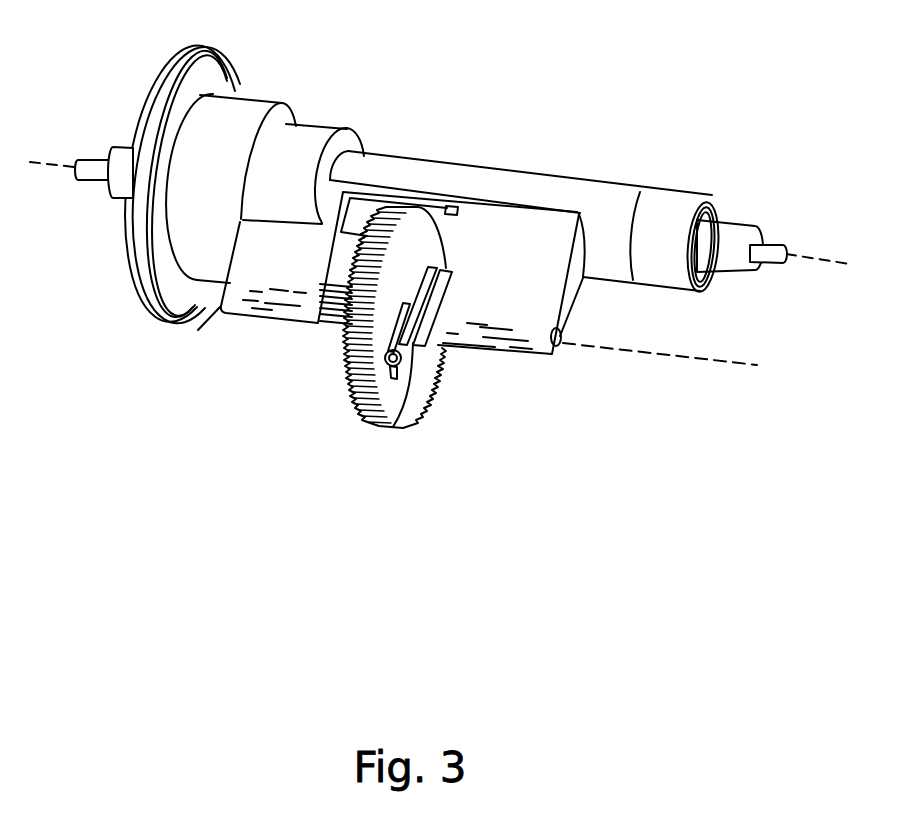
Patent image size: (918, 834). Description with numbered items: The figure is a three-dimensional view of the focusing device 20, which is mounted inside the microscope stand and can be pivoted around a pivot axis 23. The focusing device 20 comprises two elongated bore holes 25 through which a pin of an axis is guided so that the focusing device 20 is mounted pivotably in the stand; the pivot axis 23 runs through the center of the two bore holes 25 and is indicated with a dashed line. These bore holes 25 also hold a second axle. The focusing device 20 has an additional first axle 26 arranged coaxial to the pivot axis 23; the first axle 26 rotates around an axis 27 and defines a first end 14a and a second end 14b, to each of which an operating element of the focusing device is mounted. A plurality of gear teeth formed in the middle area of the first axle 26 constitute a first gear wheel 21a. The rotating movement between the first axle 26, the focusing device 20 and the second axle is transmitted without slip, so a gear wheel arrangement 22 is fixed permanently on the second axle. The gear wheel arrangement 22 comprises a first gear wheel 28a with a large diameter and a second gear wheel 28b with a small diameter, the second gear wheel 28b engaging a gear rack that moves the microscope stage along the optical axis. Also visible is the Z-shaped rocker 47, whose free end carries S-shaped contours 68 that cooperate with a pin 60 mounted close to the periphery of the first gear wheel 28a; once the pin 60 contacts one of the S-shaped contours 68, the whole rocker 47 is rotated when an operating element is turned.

The first end 14a is at (100, 165).
The second end 14b is at (768, 250).
The focusing device 20 is at (472, 117).
The first gear wheel 21a is at (447, 212).
The gear wheel arrangement 22 is at (372, 399).
The pivot axis 23 is at (662, 352).
The elongated bore holes 25 is at (222, 298).
The first axle 26 is at (131, 158).
The axis 27 is at (38, 164).
The first gear wheel 28a is at (428, 380).
The second gear wheel 28b is at (340, 306).
The rocker 47 is at (435, 365).
The pin 60 is at (386, 374).
The S-shaped contour 68 is at (352, 383).